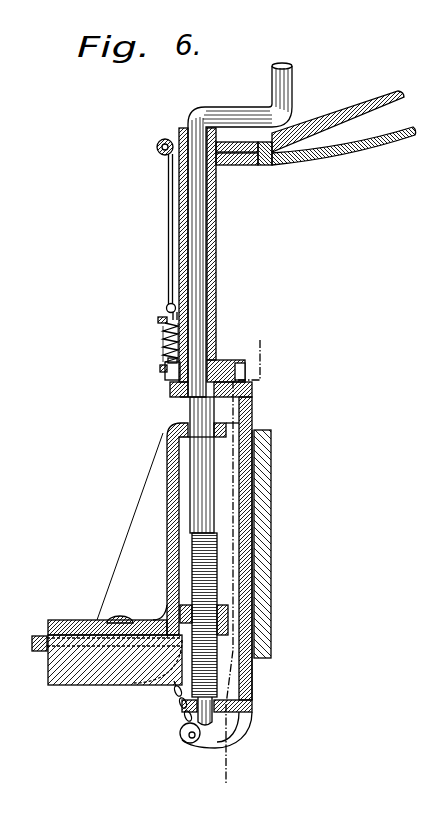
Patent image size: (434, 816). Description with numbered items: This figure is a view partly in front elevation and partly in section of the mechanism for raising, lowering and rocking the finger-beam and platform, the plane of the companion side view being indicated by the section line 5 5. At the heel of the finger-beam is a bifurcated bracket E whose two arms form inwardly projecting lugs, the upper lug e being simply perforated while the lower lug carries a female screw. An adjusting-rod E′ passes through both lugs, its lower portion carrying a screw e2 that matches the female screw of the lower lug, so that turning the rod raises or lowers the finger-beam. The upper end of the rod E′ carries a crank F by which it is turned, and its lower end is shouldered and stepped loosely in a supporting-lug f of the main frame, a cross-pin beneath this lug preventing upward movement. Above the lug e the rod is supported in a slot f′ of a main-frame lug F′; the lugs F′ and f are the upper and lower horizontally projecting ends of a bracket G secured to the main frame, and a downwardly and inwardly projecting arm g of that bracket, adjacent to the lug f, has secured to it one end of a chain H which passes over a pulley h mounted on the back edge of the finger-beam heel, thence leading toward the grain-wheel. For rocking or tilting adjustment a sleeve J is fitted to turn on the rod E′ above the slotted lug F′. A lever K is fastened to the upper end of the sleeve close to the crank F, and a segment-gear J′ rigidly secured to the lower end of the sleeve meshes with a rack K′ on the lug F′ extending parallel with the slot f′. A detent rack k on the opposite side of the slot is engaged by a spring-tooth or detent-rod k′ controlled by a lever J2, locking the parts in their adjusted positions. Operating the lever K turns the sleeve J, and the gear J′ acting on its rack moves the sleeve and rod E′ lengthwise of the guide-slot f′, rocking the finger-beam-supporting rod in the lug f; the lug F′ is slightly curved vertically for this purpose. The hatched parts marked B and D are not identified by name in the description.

The lever or crank F is at (240, 230).
The sleeve J is at (201, 255).
The segment-gear or toothed arc J' is at (226, 365).
The lever J2 is at (338, 120).
The lever K is at (344, 146).
The rack or row of teeth K' is at (262, 370).
The spring-tooth or detent-rod k' is at (161, 255).
The detent rack or row of teeth k is at (157, 373).
The main-frame lug F' is at (223, 390).
The slot f' is at (165, 405).
The upper lug e is at (232, 646).
The bifurcated bracket E is at (196, 572).
The adjusting-rod E' is at (202, 465).
The screw e2 is at (204, 629).
The wall B is at (268, 544).
The bracket G is at (253, 541).
The base block D is at (115, 568).
The chain H is at (42, 651).
The pulley h is at (148, 683).
The supporting-lug f is at (174, 706).
The arm g is at (191, 744).
The section line 5 5 is at (278, 337).